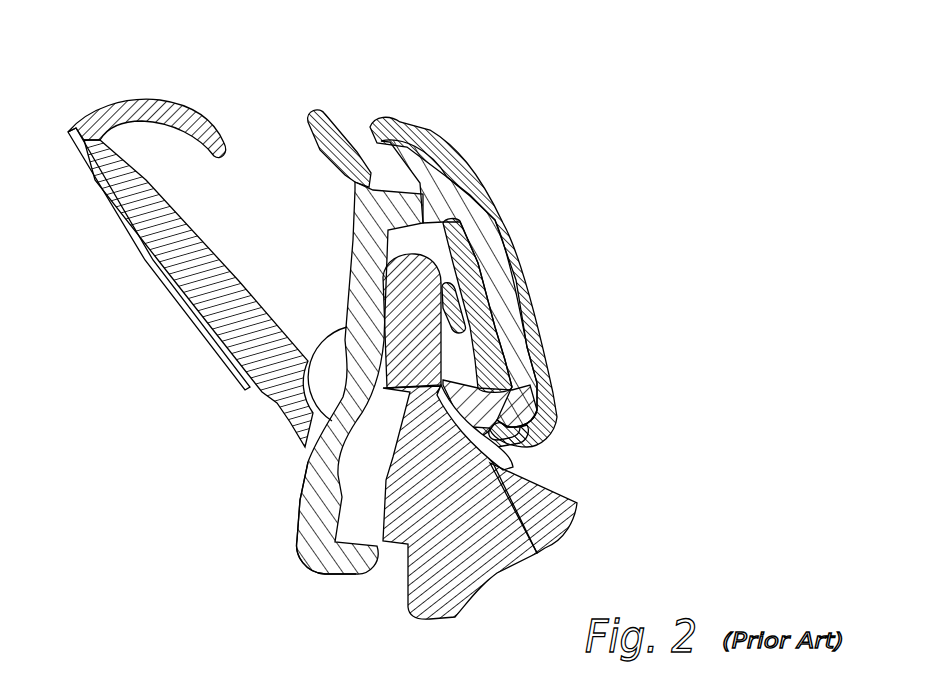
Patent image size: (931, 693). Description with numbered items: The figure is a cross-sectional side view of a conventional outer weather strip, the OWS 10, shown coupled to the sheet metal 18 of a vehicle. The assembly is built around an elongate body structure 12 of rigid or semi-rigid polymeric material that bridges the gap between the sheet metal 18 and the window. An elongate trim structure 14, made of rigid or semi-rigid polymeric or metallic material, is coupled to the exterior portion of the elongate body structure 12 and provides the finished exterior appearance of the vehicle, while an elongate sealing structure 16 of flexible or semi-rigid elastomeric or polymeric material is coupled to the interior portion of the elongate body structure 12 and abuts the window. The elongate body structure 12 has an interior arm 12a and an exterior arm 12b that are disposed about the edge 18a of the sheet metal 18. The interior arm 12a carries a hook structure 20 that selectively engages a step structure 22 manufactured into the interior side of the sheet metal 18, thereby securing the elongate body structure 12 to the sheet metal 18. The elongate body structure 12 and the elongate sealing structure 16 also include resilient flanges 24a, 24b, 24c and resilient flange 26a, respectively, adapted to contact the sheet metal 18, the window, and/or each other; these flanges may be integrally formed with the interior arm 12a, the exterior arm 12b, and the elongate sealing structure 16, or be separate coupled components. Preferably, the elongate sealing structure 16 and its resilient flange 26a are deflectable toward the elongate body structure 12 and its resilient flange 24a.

The OWS 10 is at (433, 94).
The elongate body structure 12 is at (283, 407).
The interior arm 12a is at (298, 506).
The exterior arm 12b is at (537, 307).
The elongate trim structure 14 is at (497, 190).
The elongate sealing structure 16 is at (160, 282).
The sheet metal 18 is at (447, 427).
The edge 18a is at (432, 232).
The hook structure 20 is at (325, 576).
The step structure 22 is at (387, 545).
The resilient flange 24a is at (320, 118).
The resilient flange 24b is at (525, 548).
The resilient flange 24c is at (455, 283).
The resilient flange 26a is at (175, 110).